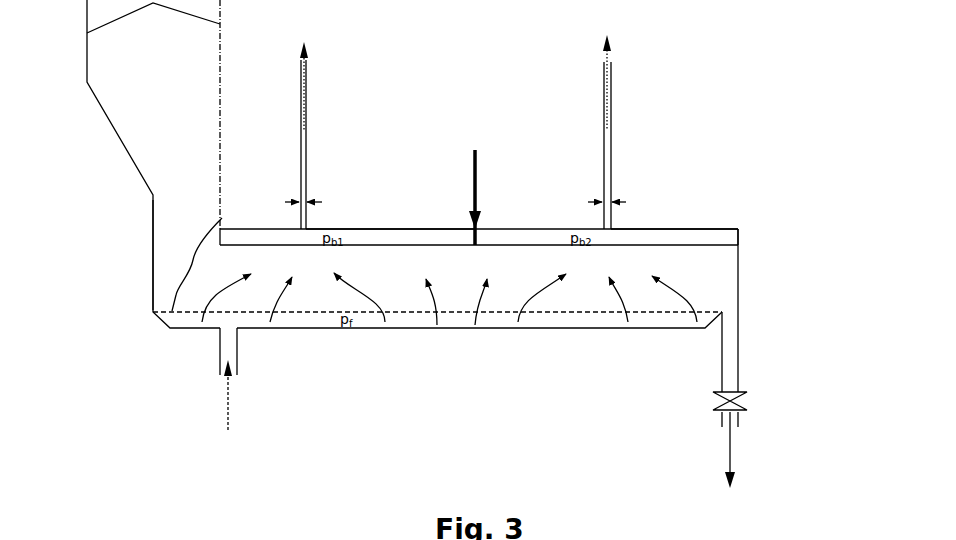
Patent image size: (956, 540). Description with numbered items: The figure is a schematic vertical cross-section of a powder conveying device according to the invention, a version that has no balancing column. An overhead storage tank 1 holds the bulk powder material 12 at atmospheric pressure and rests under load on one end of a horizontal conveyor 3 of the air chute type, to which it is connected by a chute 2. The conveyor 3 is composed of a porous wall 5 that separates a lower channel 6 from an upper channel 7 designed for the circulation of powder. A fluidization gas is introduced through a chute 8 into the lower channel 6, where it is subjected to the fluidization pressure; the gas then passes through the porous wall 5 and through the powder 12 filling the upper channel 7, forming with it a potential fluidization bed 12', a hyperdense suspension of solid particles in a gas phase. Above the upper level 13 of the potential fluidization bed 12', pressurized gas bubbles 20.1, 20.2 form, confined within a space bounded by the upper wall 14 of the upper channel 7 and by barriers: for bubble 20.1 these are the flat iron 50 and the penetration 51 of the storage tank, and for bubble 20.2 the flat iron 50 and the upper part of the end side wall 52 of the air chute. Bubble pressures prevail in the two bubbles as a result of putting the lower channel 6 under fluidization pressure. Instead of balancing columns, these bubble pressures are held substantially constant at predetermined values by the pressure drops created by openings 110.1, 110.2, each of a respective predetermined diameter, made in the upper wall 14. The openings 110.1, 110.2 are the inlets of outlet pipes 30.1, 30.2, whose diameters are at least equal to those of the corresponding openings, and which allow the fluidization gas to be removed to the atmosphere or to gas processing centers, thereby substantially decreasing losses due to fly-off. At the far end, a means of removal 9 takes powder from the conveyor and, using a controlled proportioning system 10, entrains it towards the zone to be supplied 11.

The overhead storage tank 1 is at (132, 112).
The chute 2 is at (175, 222).
The conveyor 3 is at (455, 77).
The porous wall 5 is at (500, 313).
The lower channel 6 is at (407, 320).
The upper channel 7 is at (318, 290).
The chute 8 is at (217, 351).
The means of removal 9 is at (740, 362).
The controlled proportioning system 10 is at (753, 402).
The zone to be supplied 11 is at (746, 451).
The bulk powder material 12 is at (171, 142).
The potential fluidization bed 12' is at (542, 274).
The upper level of the potential fluidization bed 13 is at (520, 244).
The upper wall 14 is at (417, 229).
The gas bubble 20.1 is at (372, 240).
The gas bubble 20.2 is at (670, 240).
The outlet pipe 30.1 is at (306, 158).
The outlet pipe 30.2 is at (611, 171).
The flat iron 50 is at (468, 187).
The penetration of the storage tank 51 is at (221, 229).
The end side wall 52 is at (739, 237).
The opening 110.1 is at (301, 228).
The opening 110.2 is at (596, 207).